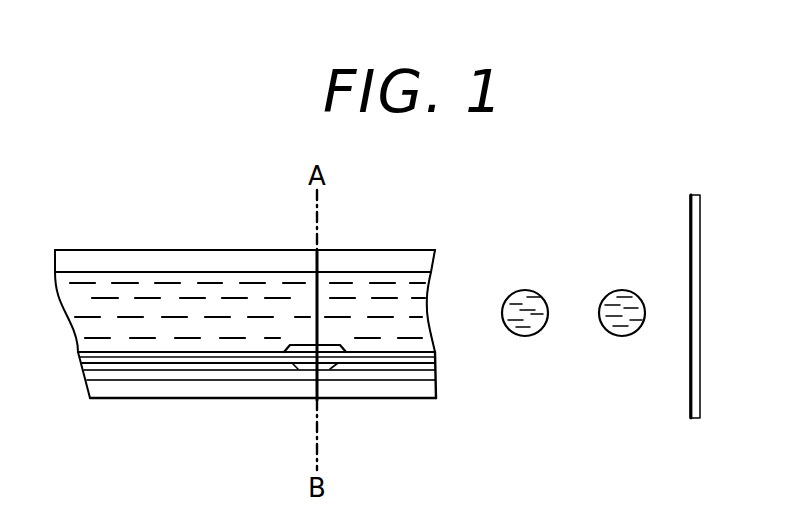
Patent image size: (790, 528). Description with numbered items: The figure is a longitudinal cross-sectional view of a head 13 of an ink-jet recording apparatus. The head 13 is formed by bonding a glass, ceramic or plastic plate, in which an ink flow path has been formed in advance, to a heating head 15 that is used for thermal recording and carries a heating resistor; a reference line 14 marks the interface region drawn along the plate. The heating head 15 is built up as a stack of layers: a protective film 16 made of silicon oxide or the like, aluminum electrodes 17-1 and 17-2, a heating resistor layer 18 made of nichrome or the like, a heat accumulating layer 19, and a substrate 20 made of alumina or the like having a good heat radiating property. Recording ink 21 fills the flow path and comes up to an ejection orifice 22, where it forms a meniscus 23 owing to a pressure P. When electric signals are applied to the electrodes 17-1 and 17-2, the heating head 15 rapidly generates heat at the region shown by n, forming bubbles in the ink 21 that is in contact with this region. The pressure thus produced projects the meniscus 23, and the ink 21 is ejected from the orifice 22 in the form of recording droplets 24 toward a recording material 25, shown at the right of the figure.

The head 13 is at (175, 250).
The transparent electrode 14 is at (233, 272).
The heating head 15 is at (55, 345).
The protective film 16 is at (110, 362).
The aluminum electrode 17-1 is at (165, 363).
The heating resistor layer 18 is at (238, 370).
The heat accumulating layer 19 is at (283, 375).
The substrate 20 is at (362, 390).
The aluminum electrode 17-2 is at (405, 363).
The recording ink 21 is at (95, 282).
The ejection orifice 22 is at (433, 330).
The meniscus 23 is at (430, 312).
The recording droplets 24 is at (647, 290).
The recording material 25 is at (690, 257).
The heat generating region n is at (305, 345).